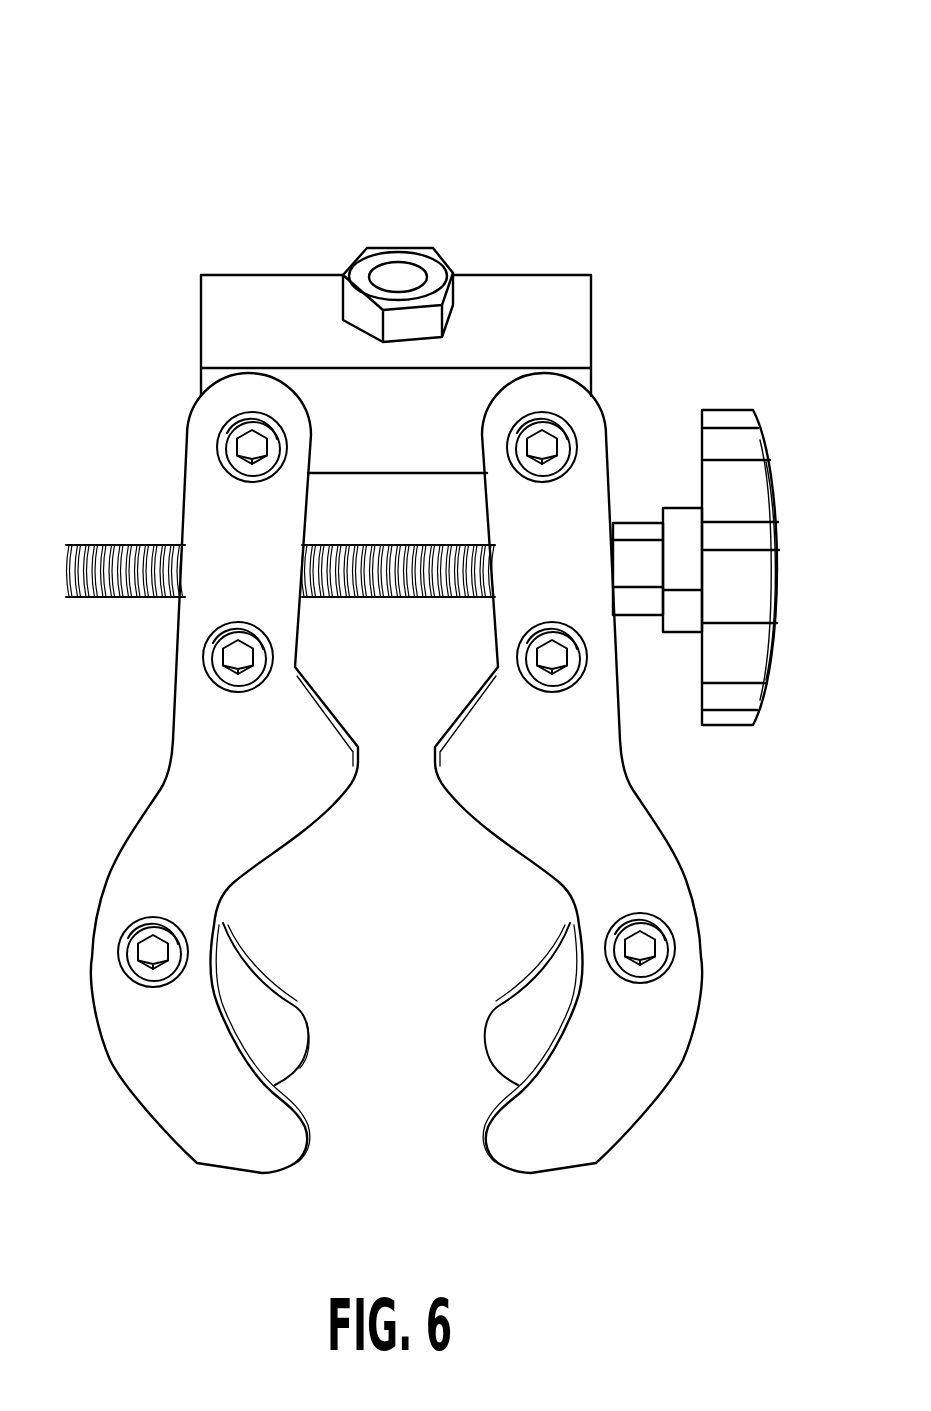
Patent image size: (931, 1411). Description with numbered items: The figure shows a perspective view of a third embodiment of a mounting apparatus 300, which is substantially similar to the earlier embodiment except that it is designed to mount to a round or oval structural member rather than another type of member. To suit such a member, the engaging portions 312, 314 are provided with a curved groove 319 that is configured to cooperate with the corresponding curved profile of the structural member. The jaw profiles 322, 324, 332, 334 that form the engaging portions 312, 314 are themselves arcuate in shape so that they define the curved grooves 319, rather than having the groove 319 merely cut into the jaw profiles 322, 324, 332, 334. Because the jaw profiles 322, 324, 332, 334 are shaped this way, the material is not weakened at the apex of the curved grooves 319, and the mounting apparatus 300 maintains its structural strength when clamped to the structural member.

The mounting apparatus 300 is at (265, 112).
The engaging portion 312 is at (320, 1110).
The engaging portion 314 is at (488, 1088).
The curved groove 319 is at (315, 990).
The jaw profile 322 is at (172, 1108).
The jaw profile 324 is at (245, 988).
The jaw profile 332 is at (622, 1108).
The jaw profile 334 is at (550, 990).